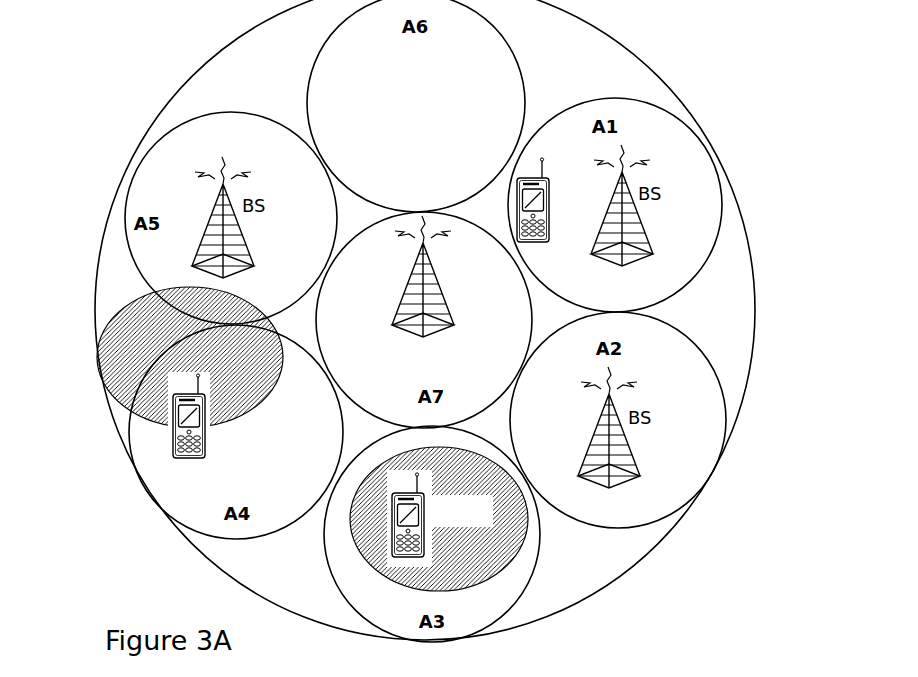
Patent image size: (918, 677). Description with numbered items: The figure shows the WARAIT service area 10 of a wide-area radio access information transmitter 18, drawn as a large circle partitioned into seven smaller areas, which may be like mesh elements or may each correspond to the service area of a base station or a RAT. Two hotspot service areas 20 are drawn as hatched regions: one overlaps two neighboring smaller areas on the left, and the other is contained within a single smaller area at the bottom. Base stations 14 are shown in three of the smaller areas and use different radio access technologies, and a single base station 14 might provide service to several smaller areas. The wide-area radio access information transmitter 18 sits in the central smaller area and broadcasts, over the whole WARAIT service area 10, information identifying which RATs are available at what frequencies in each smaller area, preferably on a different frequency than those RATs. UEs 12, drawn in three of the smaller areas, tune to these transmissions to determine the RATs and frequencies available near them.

The WARAIT service area 10 is at (597, 42).
The UE 12 is at (534, 242).
The base station 14 is at (243, 250).
The wide-area radio access information transmitter 18 is at (438, 293).
The hotspot service area 20 is at (128, 345).